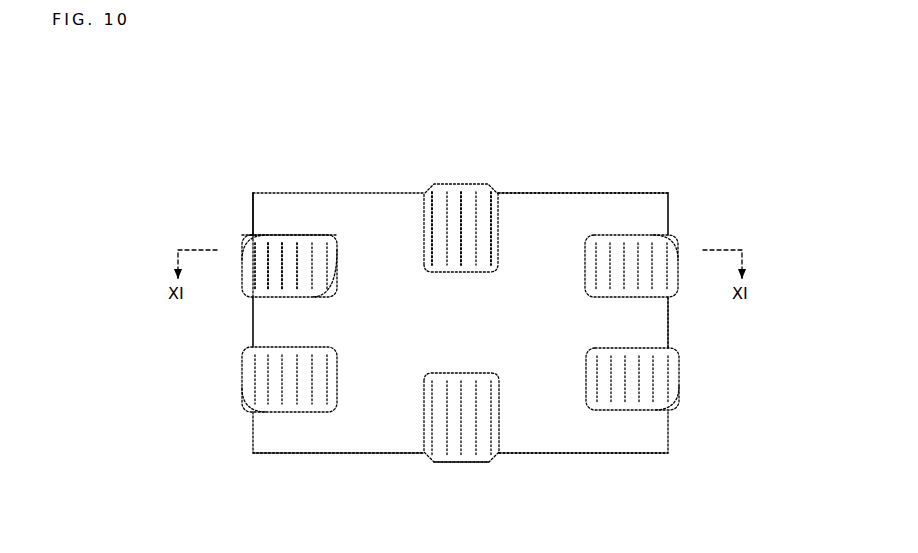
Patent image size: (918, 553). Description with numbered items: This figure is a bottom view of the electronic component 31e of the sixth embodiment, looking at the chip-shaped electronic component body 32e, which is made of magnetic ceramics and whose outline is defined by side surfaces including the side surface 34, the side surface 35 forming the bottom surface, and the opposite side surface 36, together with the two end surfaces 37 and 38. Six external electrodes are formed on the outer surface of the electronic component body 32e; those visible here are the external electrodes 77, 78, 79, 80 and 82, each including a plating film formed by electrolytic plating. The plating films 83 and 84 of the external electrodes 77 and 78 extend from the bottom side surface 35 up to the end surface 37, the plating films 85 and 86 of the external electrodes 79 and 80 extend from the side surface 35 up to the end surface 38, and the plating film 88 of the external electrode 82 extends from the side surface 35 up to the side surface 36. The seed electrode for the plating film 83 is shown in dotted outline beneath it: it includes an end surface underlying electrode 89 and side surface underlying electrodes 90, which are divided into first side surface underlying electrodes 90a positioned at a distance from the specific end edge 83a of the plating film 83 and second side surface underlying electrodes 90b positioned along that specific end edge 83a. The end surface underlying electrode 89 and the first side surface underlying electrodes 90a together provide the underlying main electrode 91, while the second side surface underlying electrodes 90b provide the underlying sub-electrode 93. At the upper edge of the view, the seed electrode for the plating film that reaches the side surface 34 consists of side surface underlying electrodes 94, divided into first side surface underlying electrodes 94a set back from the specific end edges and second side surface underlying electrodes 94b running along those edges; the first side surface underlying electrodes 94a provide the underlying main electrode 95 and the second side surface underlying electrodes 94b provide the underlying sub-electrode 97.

The electronic component 31e is at (384, 57).
The electronic component body 32e is at (575, 192).
The side surface 34 is at (633, 193).
The side surface 35 is at (356, 415).
The side surface 36 is at (565, 455).
The end surface 37 is at (253, 328).
The end surface 38 is at (668, 327).
The external electrode 77 is at (240, 242).
The external electrode 78 is at (240, 404).
The external electrode 79 is at (682, 238).
The external electrode 80 is at (681, 410).
The external electrode 82 is at (461, 466).
The plating film 83 is at (270, 276).
The specific end edge 83a is at (338, 282).
The plating film 84 is at (258, 382).
The plating film 85 is at (658, 276).
The plating film 86 is at (658, 380).
The plating film 88 is at (452, 448).
The end surface underlying electrode 89 is at (258, 258).
The side surface underlying electrodes 90 is at (325, 112).
The first side surface underlying electrodes 90a is at (272, 290).
The second side surface underlying electrodes 90b is at (343, 252).
The underlying main electrode 91 is at (315, 100).
The underlying sub-electrode 93 is at (295, 223).
The side surface underlying electrodes 94 is at (545, 80).
The first side surface underlying electrodes 94a is at (475, 179).
The second side surface underlying electrodes 94b is at (476, 179).
The underlying main electrode 95 is at (447, 213).
The underlying sub-electrode 97 is at (416, 225).